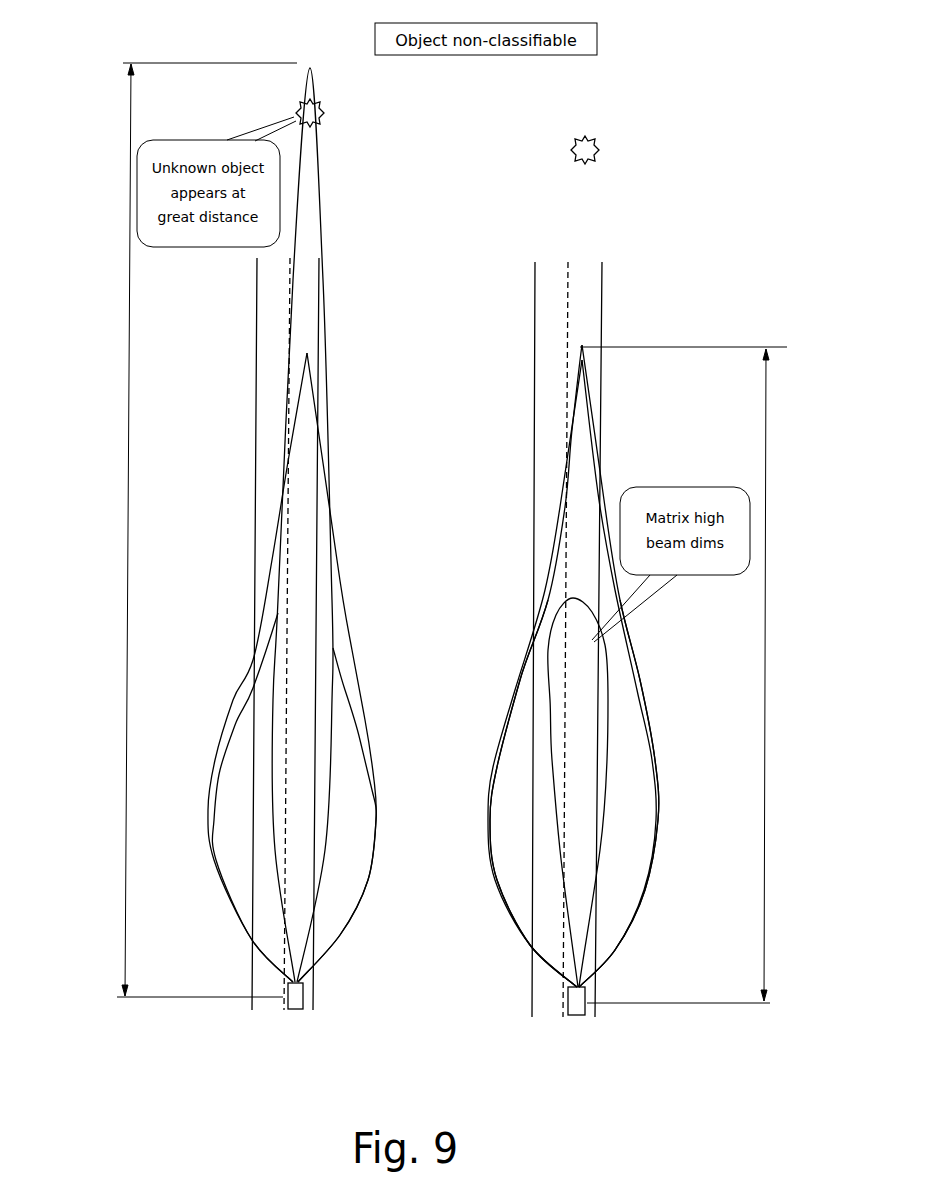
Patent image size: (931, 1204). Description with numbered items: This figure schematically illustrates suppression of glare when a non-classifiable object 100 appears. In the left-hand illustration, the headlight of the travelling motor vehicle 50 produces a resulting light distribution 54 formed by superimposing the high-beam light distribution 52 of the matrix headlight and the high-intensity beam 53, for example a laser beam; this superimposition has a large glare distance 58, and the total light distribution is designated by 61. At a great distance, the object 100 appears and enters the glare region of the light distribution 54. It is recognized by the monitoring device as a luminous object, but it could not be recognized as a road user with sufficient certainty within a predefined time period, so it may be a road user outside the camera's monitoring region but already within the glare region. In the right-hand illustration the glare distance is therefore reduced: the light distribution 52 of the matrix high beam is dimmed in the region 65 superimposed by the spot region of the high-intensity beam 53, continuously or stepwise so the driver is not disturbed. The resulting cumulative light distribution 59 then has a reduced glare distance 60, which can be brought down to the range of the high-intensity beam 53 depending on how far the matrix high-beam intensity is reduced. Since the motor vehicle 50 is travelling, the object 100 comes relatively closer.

The motor vehicle 50 is at (292, 1010).
The high-beam light distribution 52 is at (357, 733).
The high-intensity beam 53 is at (307, 513).
The resulting light distribution 54 is at (324, 182).
The glare distance 58 is at (128, 462).
The resulting light distribution 59 is at (590, 397).
The reduced glare distance 60 is at (767, 712).
The total light distribution 61 is at (312, 243).
The region superimposed by the spot region of the high-intensity beam 65 is at (595, 673).
The object 100 is at (322, 113).